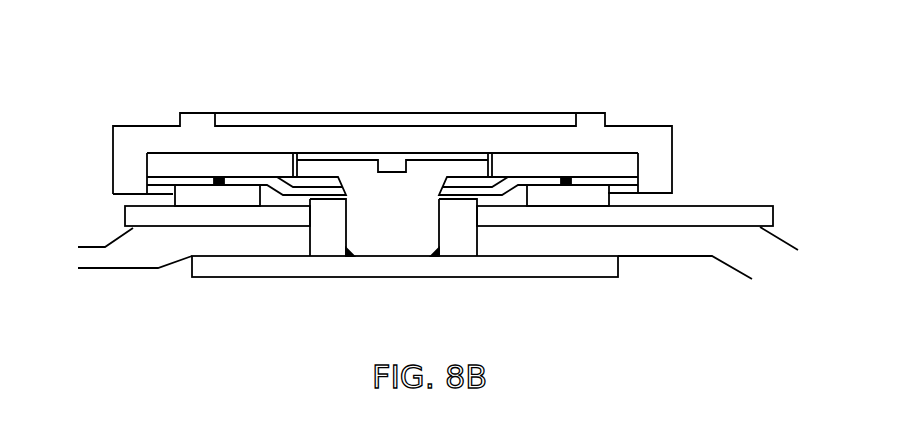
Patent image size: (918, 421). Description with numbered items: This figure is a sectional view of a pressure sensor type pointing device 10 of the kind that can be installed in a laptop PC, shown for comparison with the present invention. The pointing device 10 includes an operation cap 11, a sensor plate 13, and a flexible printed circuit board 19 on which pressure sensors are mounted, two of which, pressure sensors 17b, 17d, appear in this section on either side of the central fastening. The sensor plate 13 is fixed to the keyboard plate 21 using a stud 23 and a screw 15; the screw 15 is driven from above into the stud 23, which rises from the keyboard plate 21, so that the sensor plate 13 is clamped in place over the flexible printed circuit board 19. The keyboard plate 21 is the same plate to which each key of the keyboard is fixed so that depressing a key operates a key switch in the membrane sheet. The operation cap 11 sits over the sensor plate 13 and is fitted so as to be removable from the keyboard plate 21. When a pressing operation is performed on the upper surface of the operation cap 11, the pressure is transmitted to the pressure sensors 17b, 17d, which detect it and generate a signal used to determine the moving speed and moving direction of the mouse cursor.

The pointing device 10 is at (236, 75).
The operation cap 11 is at (490, 110).
The sensor plate 13 is at (172, 165).
The screw 15 is at (368, 171).
The pressure sensor 17b is at (243, 193).
The pressure sensor 17d is at (585, 188).
The flexible printed circuit board 19 is at (177, 220).
The keyboard plate 21 is at (123, 272).
The stud 23 is at (442, 263).